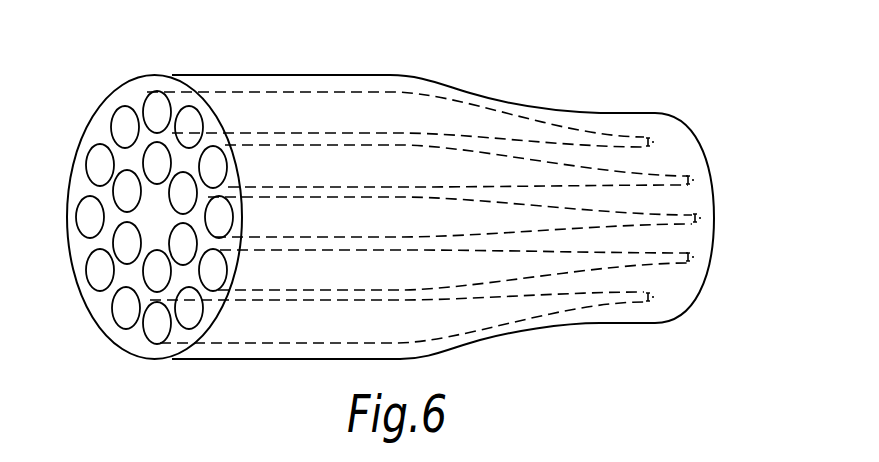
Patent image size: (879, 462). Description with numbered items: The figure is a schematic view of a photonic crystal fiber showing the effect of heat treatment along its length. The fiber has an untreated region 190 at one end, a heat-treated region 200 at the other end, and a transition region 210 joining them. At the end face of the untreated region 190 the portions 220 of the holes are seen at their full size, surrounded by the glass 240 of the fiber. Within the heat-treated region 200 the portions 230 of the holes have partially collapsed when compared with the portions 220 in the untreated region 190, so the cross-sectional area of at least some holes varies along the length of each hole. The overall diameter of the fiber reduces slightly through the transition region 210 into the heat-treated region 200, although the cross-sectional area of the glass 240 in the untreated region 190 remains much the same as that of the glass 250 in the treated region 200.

The untreated region 190 is at (270, 75).
The transition region 210 is at (473, 93).
The heat-treated region 200 is at (592, 113).
The portions of holes in the untreated region 220 is at (88, 272).
The glass in the untreated region 240 is at (102, 312).
The portions of holes in the heat-treated region 230 is at (692, 182).
The glass in the treated region 250 is at (670, 283).